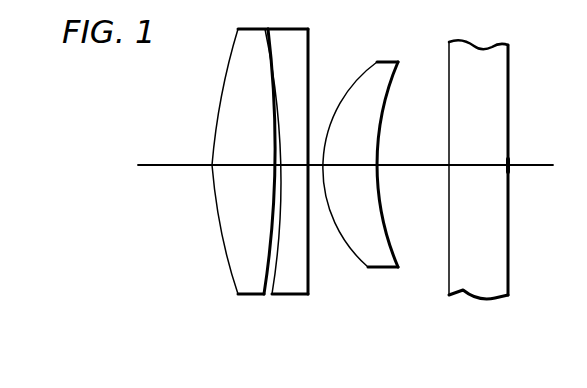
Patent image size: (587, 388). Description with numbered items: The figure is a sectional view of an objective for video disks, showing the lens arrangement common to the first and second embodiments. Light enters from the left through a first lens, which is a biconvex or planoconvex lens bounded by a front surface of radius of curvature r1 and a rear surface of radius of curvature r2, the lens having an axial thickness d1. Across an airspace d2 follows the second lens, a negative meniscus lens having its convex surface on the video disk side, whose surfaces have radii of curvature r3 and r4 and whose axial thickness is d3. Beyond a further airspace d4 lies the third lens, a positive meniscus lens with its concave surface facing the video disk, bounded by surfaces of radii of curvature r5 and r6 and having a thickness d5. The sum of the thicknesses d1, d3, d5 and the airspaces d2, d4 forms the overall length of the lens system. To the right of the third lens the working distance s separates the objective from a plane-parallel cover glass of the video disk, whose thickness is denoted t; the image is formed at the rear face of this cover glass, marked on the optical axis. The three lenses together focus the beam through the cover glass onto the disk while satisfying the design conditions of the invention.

The radius of curvature of first lens front surface r1 is at (230, 280).
The radius of curvature of first lens rear surface r2 is at (264, 285).
The radius of curvature of second lens front surface r3 is at (272, 289).
The radius of curvature of second lens rear surface r4 is at (308, 284).
The radius of curvature of third lens front surface r5 is at (364, 262).
The radius of curvature of third lens rear surface r6 is at (393, 254).
The thickness of first lens d1 is at (230, 164).
The airspace between first and second lenses d2 is at (275, 164).
The thickness of second lens d3 is at (296, 164).
The airspace between second and third lenses d4 is at (318, 164).
The thickness of third lens d5 is at (348, 164).
The working distance s is at (408, 164).
The thickness of cover glass t is at (472, 164).